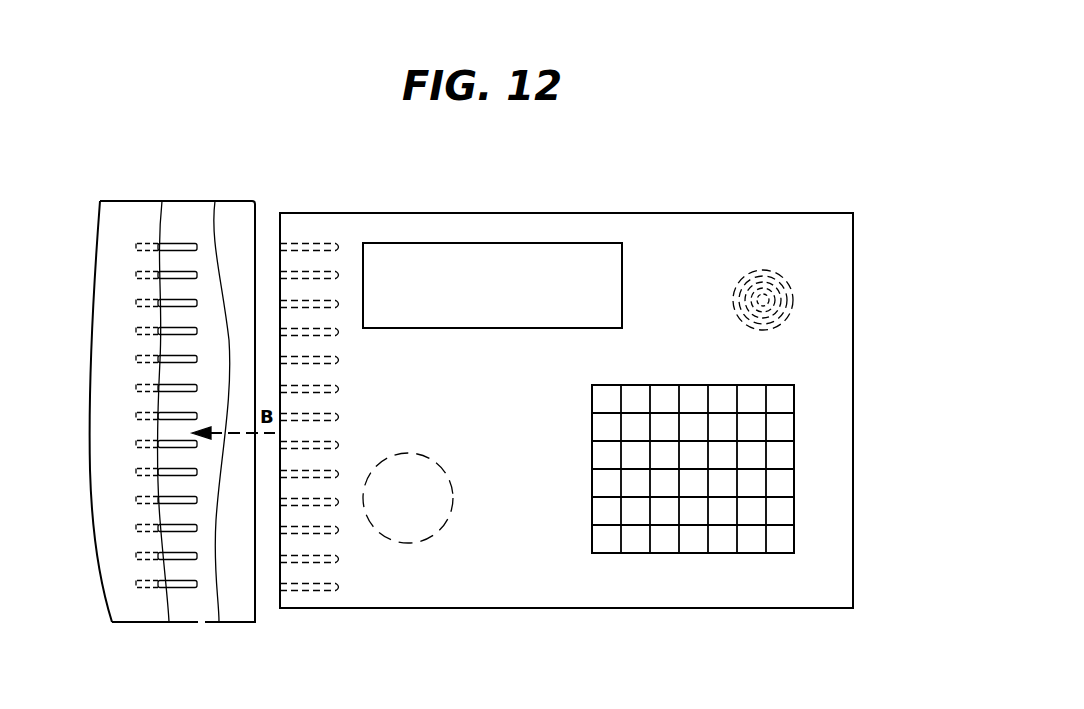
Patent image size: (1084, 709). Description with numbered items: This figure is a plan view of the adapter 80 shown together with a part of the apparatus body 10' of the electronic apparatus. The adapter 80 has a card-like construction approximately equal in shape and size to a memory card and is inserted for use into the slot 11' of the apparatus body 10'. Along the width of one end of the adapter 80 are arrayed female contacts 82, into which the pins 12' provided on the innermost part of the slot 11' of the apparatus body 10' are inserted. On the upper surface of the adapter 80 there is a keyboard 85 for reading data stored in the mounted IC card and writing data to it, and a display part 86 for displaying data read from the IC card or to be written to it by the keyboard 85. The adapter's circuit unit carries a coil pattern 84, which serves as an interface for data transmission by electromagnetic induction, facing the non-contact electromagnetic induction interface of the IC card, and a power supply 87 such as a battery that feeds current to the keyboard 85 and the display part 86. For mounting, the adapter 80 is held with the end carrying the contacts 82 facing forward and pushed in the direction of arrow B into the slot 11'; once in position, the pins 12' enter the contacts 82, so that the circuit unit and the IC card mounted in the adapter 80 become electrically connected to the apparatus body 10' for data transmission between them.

The apparatus body 10' is at (194, 373).
The slot 11' is at (175, 383).
The pins 12' is at (222, 425).
The adapter 80 is at (692, 197).
The female contacts 82 is at (330, 243).
The coil pattern 84 is at (795, 300).
The keyboard 85 is at (783, 457).
The display part 86 is at (537, 255).
The power supply 87 is at (452, 507).